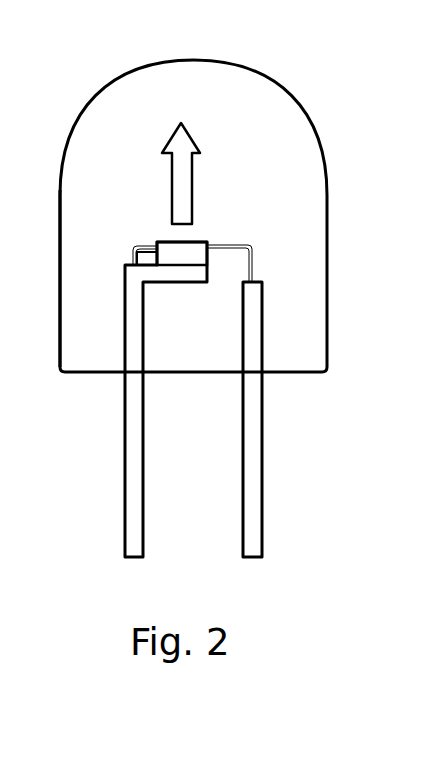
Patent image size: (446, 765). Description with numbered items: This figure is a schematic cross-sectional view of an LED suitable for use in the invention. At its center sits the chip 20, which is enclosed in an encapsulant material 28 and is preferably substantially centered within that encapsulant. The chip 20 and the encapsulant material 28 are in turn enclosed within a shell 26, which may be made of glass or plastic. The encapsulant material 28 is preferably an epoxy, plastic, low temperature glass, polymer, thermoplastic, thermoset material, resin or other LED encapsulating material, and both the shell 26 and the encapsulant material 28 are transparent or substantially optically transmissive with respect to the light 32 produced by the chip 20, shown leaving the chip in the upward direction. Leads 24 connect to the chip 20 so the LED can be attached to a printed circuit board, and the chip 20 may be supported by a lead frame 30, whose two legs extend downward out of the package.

The chip 20 is at (182, 255).
The leads 24 is at (130, 255).
The shell 26 is at (310, 129).
The encapsulant material 28 is at (78, 208).
The lead frame 30 is at (132, 431).
The light 32 is at (172, 195).